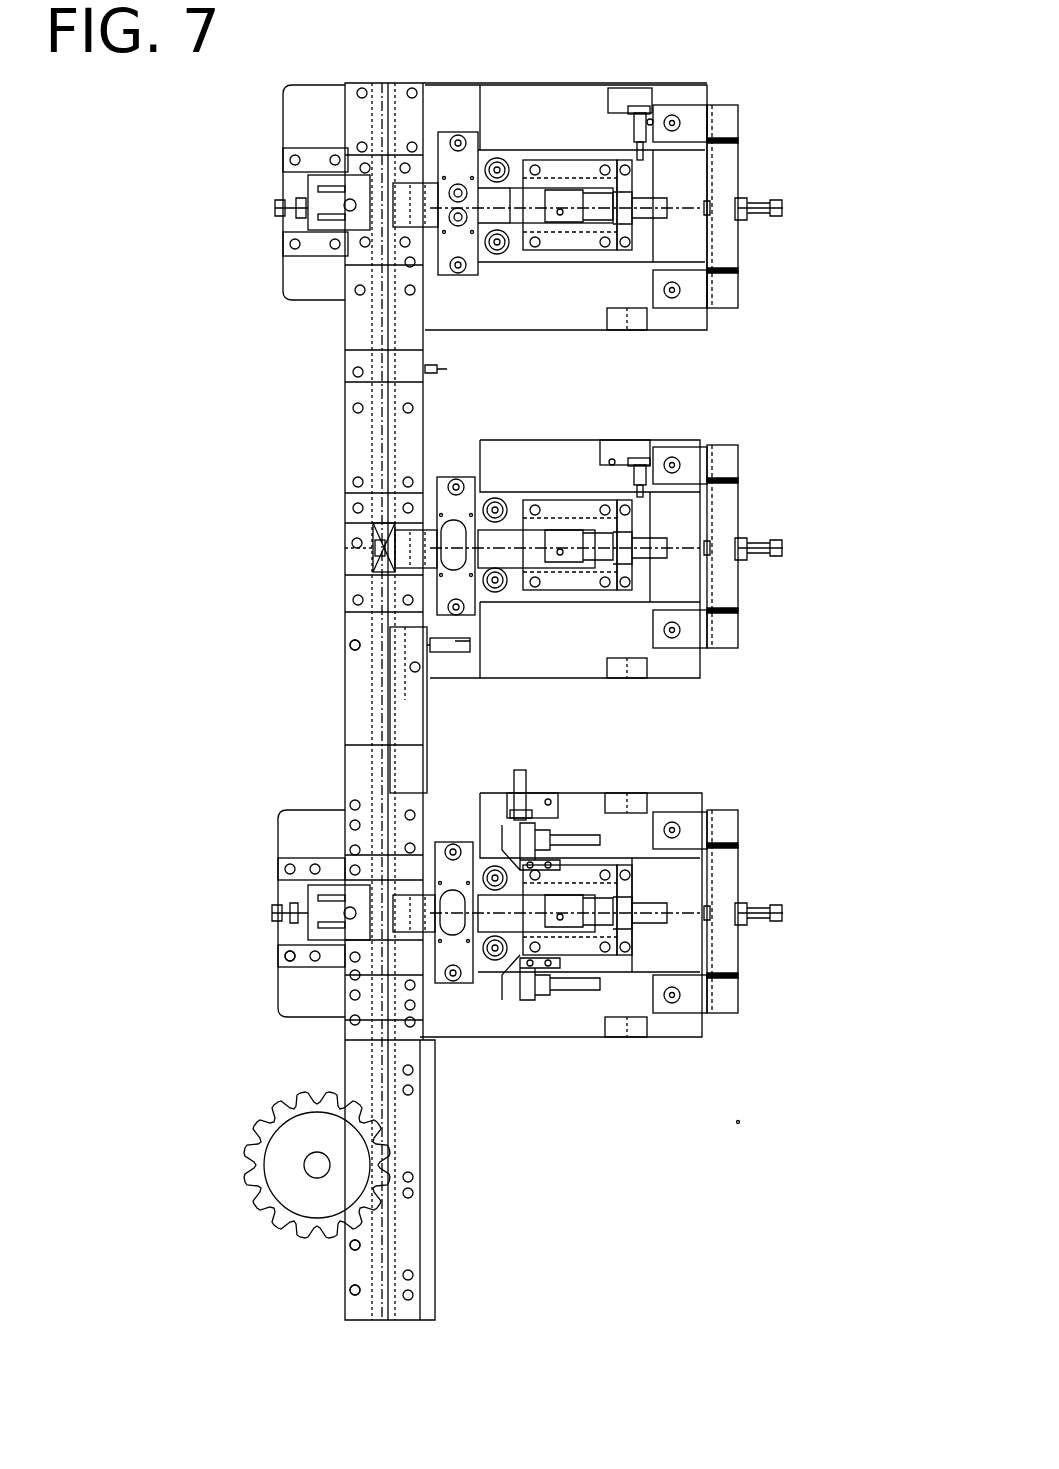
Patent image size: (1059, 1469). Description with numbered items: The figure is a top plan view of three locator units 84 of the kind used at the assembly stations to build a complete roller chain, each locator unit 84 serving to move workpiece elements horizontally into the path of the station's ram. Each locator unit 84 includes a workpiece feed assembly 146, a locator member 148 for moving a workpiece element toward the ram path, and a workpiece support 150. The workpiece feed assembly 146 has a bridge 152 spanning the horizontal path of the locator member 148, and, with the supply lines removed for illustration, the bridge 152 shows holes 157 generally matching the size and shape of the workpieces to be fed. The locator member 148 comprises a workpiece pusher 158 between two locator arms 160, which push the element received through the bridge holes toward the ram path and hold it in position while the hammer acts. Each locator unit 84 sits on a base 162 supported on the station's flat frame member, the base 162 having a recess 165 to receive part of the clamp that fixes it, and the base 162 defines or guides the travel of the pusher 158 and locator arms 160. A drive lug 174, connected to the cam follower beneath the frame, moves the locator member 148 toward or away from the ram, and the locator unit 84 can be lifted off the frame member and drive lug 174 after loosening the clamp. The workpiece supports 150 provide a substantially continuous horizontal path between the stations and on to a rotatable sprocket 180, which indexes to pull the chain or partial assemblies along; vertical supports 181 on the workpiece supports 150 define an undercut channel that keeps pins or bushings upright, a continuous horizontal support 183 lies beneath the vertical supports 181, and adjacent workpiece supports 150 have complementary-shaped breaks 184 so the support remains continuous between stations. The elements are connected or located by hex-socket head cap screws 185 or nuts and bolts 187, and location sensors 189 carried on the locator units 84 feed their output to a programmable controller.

The locator unit 84 is at (707, 325).
The workpiece feed assembly 146 is at (472, 250).
The locator member 148 is at (515, 190).
The workpiece support 150 is at (430, 368).
The bridge 152 is at (475, 265).
The holes 157 is at (462, 215).
The workpiece pusher 158 is at (432, 225).
The locator arms 160 is at (385, 175).
The base 162 is at (685, 95).
The recess 165 is at (627, 322).
The drive lug 174 is at (568, 212).
The sprocket 180 is at (265, 1130).
The vertical supports 181 is at (360, 345).
The continuous horizontal support 183 is at (380, 370).
The breaks 184 is at (350, 385).
The hex-socket head cap screws 185 is at (660, 182).
The nuts and bolts 187 is at (465, 135).
The location sensors 189 is at (640, 120).